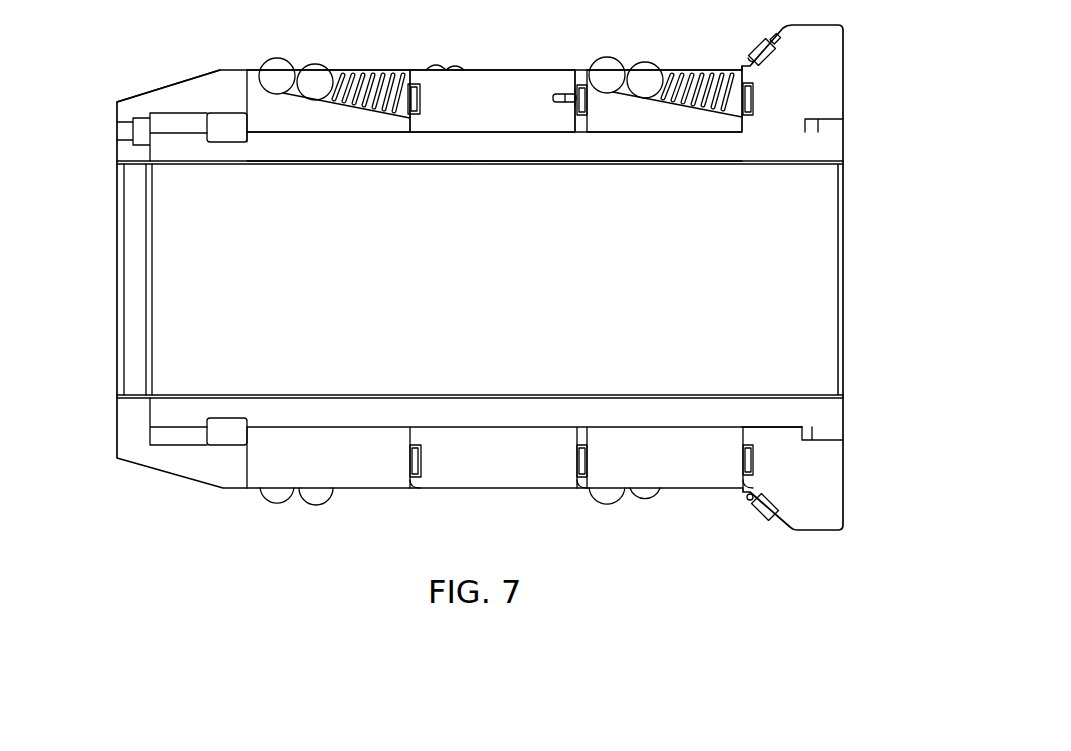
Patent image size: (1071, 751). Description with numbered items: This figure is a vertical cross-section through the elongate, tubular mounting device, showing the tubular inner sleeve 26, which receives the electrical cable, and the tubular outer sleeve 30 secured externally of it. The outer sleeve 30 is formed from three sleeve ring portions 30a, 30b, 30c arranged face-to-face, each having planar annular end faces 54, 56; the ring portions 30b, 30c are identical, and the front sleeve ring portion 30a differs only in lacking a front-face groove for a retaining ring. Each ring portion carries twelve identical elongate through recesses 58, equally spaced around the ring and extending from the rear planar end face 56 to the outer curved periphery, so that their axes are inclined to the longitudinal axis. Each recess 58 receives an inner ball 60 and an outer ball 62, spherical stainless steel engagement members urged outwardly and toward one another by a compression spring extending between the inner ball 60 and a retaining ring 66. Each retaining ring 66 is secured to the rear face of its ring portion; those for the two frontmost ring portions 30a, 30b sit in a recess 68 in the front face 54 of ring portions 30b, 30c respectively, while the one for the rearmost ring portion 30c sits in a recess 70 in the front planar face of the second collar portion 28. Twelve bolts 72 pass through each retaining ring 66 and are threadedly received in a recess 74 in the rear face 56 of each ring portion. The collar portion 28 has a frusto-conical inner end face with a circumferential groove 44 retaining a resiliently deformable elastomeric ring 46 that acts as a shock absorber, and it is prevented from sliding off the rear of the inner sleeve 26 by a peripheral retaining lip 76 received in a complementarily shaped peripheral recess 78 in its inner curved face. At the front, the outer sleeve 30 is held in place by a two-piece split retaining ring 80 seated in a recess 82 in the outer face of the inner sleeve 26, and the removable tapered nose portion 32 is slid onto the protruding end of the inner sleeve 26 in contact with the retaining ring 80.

The inner sleeve 26 is at (343, 155).
The second collar portion 28 is at (545, 160).
The outer sleeve 30 is at (510, 55).
The front sleeve ring portion 30a is at (262, 128).
The sleeve ring portion 30b is at (483, 125).
The rearmost sleeve ring portion 30c is at (655, 125).
The tapered nose portion 32 is at (197, 76).
The circumferential groove 44 is at (773, 37).
The elastomeric ring 46 is at (752, 50).
The front planar end face 54 is at (240, 466).
The rear planar end face 56 is at (413, 486).
The elongate through recess 58 is at (383, 117).
The inner ball 60 is at (318, 72).
The outer ball 62 is at (277, 63).
The retaining ring 66 is at (421, 98).
The recess 68 is at (420, 110).
The recess 70 is at (752, 108).
The bolt 72 is at (566, 92).
The recess 74 is at (555, 99).
The peripheral retaining lip 76 is at (800, 428).
The peripheral recess 78 is at (818, 123).
The retaining ring 80 is at (227, 140).
The recess 82 is at (228, 427).